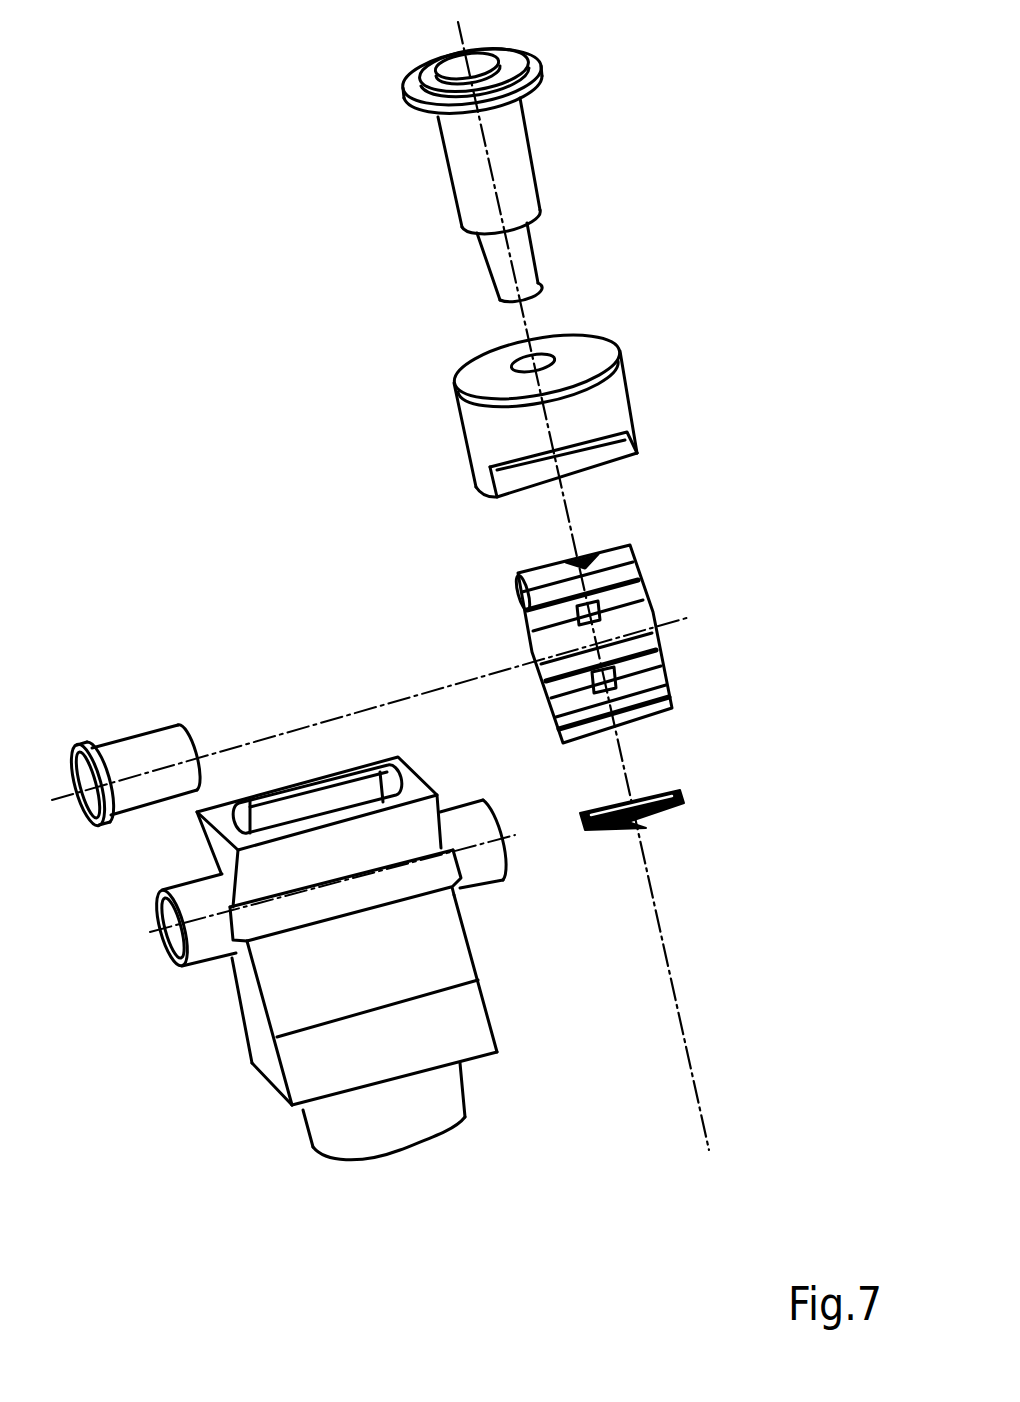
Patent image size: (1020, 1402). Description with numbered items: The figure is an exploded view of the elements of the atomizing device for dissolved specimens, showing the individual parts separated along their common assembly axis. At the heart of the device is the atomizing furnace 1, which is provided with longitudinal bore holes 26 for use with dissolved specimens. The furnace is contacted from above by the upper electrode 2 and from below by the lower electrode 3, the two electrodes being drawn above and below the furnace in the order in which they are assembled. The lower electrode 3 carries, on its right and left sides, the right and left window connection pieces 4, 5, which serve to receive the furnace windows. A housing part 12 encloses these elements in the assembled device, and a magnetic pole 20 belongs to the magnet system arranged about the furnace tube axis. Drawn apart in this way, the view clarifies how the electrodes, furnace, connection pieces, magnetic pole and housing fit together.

The atomizing furnace 1 is at (652, 597).
The upper electrode 2 is at (627, 390).
The lower electrode 3 is at (243, 1033).
The right window connection piece 4 is at (203, 945).
The left window connection piece 5 is at (485, 858).
The housing part 12 is at (530, 147).
The magnetic pole 20 is at (142, 732).
The longitudinal bore holes 26 is at (678, 792).